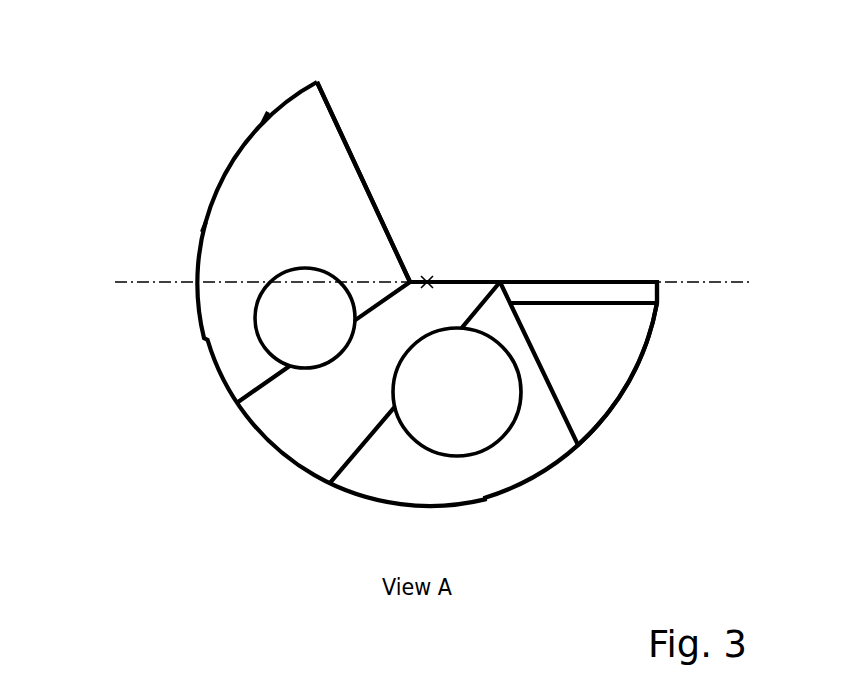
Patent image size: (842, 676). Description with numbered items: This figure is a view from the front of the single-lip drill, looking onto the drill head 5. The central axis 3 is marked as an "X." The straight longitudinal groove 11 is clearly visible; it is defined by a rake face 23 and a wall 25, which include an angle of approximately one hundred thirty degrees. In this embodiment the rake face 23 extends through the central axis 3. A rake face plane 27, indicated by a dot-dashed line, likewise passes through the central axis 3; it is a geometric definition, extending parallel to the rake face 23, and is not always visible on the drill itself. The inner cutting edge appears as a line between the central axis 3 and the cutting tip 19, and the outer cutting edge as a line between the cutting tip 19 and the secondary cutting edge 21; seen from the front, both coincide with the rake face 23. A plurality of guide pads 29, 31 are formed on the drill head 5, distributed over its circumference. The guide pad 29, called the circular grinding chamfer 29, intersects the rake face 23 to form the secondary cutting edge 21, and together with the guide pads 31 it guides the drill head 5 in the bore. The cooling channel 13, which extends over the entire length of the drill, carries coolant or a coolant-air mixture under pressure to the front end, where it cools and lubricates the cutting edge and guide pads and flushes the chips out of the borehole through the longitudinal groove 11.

The central axis 3 is at (431, 278).
The drill head 5 is at (148, 259).
The longitudinal groove 11 is at (515, 129).
The cooling channel 13 is at (425, 440).
The cutting tip 19 is at (498, 283).
The secondary cutting edge 21 is at (658, 282).
The rake face 23 is at (472, 282).
The wall 25 is at (356, 158).
The rake face plane 27 is at (168, 283).
The circular grinding chamfer 29 is at (660, 296).
The guide pads 31 is at (197, 245).